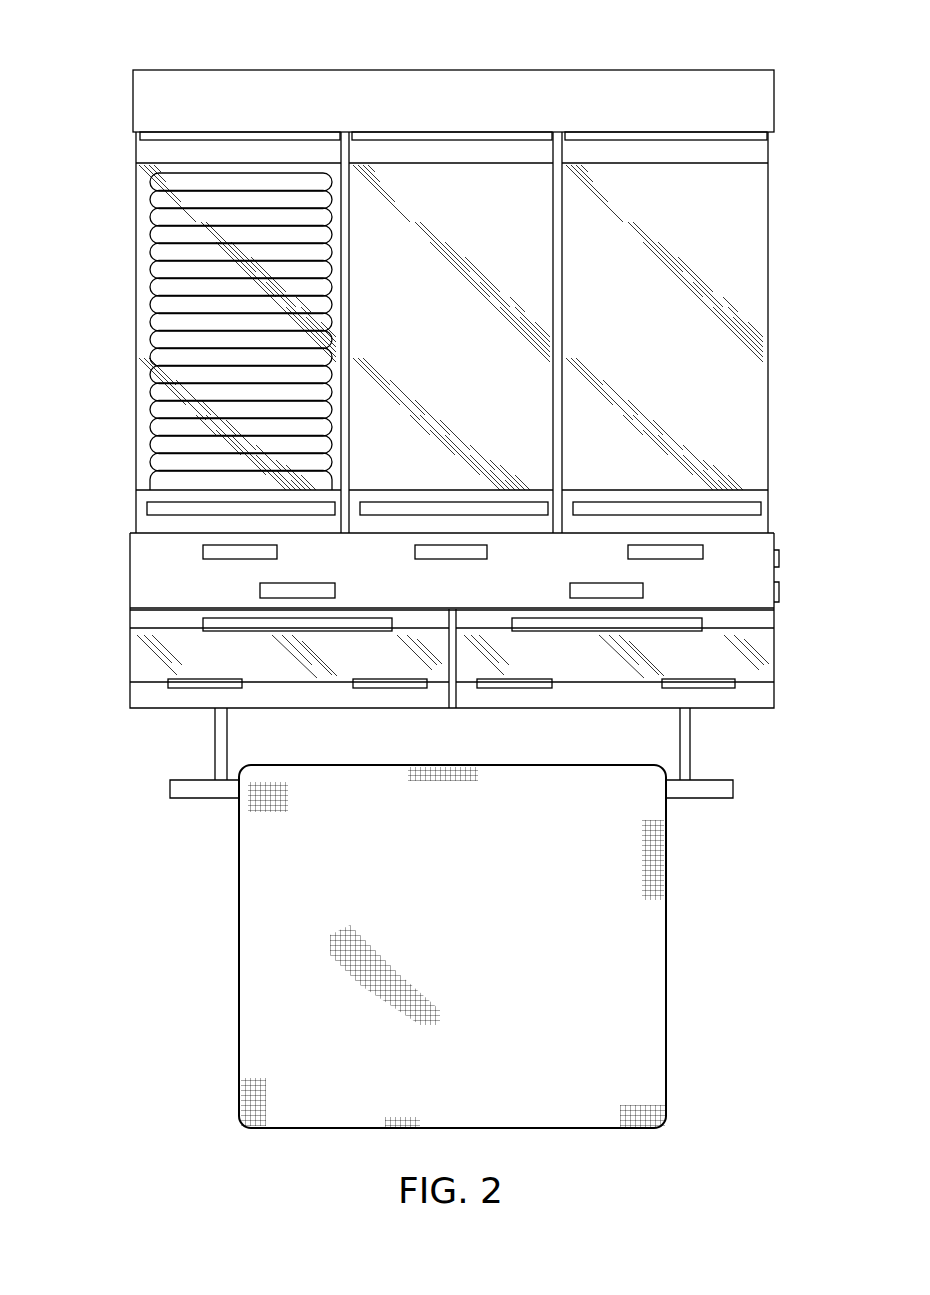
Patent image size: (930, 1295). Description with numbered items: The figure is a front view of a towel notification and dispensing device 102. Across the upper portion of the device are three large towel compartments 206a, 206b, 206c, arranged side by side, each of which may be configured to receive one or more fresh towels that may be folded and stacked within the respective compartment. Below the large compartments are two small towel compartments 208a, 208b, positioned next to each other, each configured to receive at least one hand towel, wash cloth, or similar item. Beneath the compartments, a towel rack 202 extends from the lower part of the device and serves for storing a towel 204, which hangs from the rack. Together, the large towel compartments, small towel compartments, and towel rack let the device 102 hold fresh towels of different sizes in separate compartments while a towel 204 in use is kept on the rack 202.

The towel notification and dispensing device 102 is at (486, 356).
The towel rack 202 is at (502, 757).
The towel 204 is at (519, 946).
The large towel compartment 206a is at (237, 306).
The large towel compartment 206b is at (451, 306).
The large towel compartment 206c is at (664, 306).
The small towel compartment 208a is at (242, 630).
The small towel compartment 208b is at (660, 631).